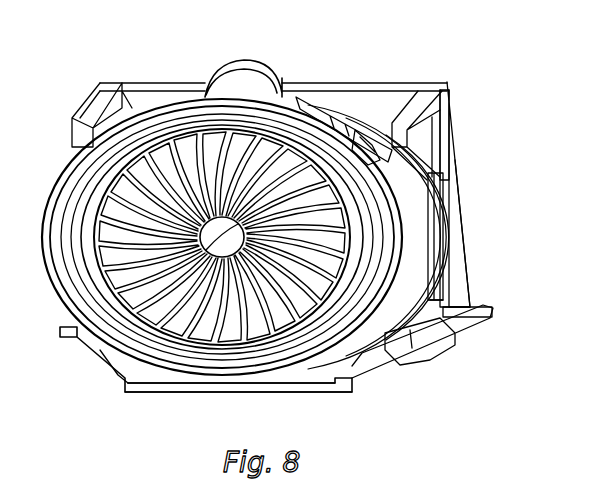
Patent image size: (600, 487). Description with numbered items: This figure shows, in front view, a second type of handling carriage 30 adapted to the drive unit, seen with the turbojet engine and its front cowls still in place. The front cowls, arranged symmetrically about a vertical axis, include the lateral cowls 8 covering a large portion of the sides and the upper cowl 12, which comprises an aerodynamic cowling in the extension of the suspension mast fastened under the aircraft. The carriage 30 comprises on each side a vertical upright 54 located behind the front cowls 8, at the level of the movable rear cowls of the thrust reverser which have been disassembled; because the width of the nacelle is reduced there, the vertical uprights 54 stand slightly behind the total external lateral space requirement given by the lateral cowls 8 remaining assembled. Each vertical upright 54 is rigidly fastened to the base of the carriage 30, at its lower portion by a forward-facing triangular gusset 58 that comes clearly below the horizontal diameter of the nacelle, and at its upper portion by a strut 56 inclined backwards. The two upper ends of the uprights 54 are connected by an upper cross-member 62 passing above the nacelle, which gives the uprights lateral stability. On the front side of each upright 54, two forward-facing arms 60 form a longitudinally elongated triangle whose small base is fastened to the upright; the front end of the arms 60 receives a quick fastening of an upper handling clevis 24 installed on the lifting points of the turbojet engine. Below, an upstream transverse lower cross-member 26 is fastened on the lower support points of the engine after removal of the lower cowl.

The upper cowl 12 is at (236, 68).
The lateral cowls 8 is at (330, 120).
The handling clevis 24 is at (362, 150).
The upper cross-member 62 is at (418, 83).
The forward-facing arms 60 is at (450, 118).
The vertical upright 54 is at (435, 187).
The strut 56 is at (468, 258).
The triangular gusset 58 is at (425, 297).
The handling carriage 30 is at (435, 356).
The lower transverse transport beam 26 is at (333, 396).